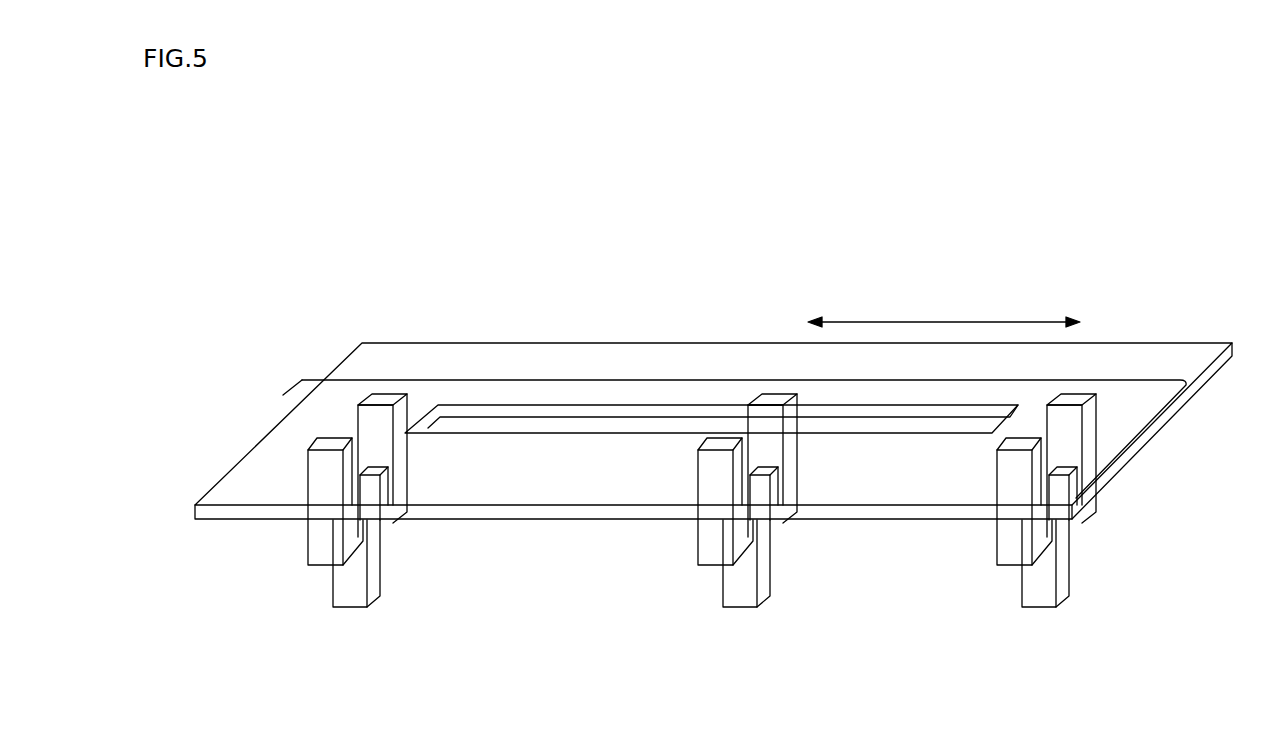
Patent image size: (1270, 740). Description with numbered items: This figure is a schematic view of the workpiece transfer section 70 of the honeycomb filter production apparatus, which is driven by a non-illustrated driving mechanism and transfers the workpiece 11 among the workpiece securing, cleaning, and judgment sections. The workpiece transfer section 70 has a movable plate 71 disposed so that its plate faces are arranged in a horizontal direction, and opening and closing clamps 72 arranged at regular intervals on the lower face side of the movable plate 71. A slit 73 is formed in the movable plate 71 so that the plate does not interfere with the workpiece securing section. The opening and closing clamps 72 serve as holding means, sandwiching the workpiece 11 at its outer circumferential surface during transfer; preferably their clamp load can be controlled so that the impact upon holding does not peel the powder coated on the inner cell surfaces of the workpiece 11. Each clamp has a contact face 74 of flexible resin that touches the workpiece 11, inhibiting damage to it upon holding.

The workpiece transfer section 70 is at (683, 380).
The movable plate 71 is at (460, 353).
The opening and closing clamps 72 is at (318, 541).
The slit 73 is at (550, 425).
The resin contact face 74 is at (366, 537).
The workpiece 11 is at (340, 587).